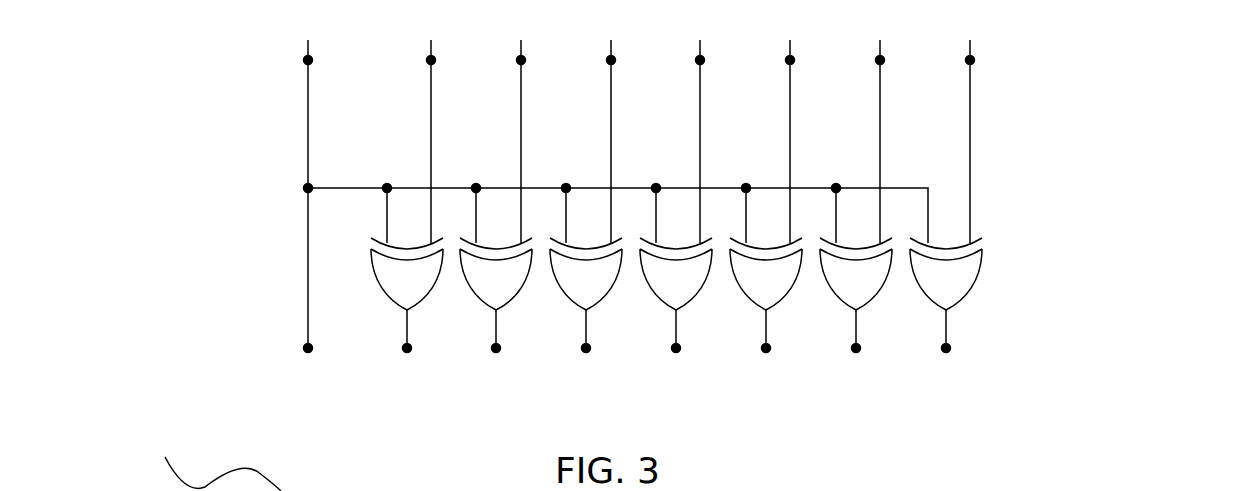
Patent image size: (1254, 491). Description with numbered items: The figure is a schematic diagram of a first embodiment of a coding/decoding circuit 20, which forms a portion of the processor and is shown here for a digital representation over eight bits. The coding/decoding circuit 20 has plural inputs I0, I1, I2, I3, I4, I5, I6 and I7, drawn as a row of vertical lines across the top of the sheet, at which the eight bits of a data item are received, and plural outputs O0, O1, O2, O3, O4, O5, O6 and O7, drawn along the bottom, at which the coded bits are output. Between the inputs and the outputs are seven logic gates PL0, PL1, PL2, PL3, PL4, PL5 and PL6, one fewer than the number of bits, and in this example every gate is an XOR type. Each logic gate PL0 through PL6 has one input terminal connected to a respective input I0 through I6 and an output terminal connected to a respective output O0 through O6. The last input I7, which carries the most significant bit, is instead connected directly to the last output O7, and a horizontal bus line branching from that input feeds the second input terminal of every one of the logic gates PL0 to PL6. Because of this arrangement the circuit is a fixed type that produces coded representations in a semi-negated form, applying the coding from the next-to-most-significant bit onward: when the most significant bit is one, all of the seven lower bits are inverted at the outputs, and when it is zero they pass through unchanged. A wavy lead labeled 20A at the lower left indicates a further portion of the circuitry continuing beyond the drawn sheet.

The coding/decoding circuit 20 is at (252, 125).
The next stage circuit 20A is at (213, 453).
The last input I7 is at (337, 193).
The input I6 is at (460, 141).
The input I5 is at (550, 141).
The input I4 is at (640, 141).
The input I3 is at (729, 141).
The input I2 is at (819, 141).
The input I1 is at (909, 141).
The input I0 is at (999, 141).
The logic gate PL6 is at (418, 268).
The logic gate PL5 is at (507, 268).
The logic gate PL4 is at (597, 268).
The logic gate PL3 is at (687, 268).
The logic gate PL2 is at (777, 268).
The logic gate PL1 is at (867, 268).
The logic gate PL0 is at (957, 294).
The last output O7 is at (344, 381).
The output O6 is at (443, 363).
The output O5 is at (532, 363).
The output O4 is at (622, 363).
The output O3 is at (712, 363).
The output O2 is at (802, 363).
The output O1 is at (892, 363).
The output O0 is at (982, 363).